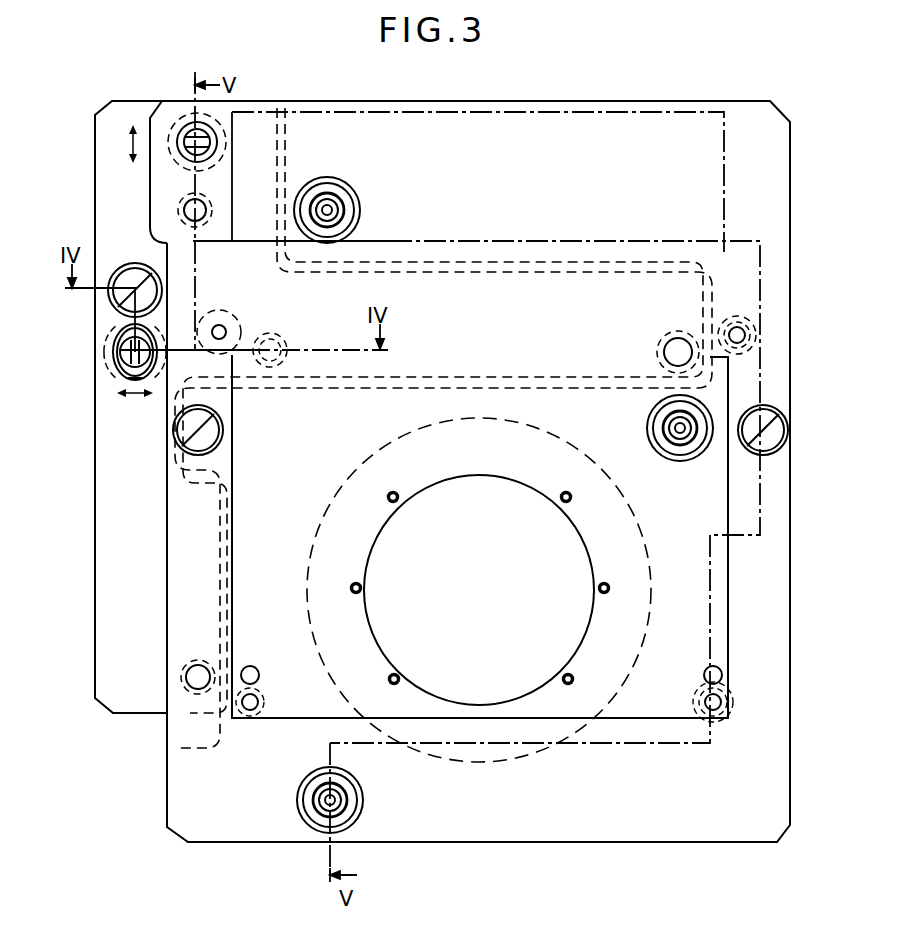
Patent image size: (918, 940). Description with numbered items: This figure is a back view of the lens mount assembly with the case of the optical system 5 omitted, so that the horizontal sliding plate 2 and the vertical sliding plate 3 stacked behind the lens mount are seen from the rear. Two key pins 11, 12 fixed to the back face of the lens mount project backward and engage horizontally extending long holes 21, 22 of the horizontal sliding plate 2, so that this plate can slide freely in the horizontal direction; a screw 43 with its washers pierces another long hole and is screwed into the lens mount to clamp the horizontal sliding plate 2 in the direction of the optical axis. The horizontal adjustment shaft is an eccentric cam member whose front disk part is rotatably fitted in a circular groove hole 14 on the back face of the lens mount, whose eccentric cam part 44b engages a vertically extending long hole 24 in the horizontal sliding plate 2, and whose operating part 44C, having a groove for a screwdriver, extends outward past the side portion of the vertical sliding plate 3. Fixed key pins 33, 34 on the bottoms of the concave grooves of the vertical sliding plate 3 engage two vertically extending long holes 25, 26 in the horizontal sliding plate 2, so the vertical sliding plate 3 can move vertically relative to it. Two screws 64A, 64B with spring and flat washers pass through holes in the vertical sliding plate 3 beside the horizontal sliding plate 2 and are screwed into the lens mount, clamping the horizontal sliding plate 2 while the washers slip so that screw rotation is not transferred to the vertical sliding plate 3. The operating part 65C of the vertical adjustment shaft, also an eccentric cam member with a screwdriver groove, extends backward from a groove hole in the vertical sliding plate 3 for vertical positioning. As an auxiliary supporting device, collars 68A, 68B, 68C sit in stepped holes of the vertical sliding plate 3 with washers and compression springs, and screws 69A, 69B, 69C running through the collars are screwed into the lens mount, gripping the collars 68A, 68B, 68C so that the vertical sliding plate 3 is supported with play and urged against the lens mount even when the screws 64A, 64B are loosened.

The horizontal sliding plate 2 is at (100, 670).
The vertical sliding plate 3 is at (167, 775).
The optical system 5 is at (560, 102).
The key pin 11 is at (293, 338).
The key pin 12 is at (660, 343).
The circular groove hole 14 is at (118, 350).
The long hole 21 is at (293, 362).
The long hole 22 is at (662, 362).
The long hole 24 is at (120, 325).
The long hole 25 is at (183, 192).
The long hole 26 is at (200, 660).
The key pin 33 is at (183, 210).
The key pin 34 is at (190, 693).
The screw 43 is at (112, 300).
The eccentric cam part 44b is at (120, 381).
The operating part 44C is at (120, 373).
The screw 64A is at (215, 452).
The screw 64B is at (775, 443).
The operating part 65C is at (210, 127).
The collar 68A is at (338, 197).
The collar 68B is at (307, 800).
The collar 68C is at (700, 427).
The screw 69A is at (340, 213).
The screw 69B is at (320, 810).
The screw 69C is at (685, 417).